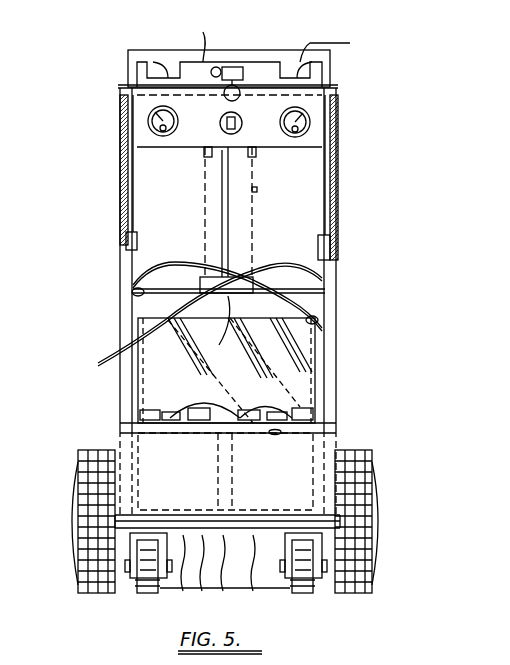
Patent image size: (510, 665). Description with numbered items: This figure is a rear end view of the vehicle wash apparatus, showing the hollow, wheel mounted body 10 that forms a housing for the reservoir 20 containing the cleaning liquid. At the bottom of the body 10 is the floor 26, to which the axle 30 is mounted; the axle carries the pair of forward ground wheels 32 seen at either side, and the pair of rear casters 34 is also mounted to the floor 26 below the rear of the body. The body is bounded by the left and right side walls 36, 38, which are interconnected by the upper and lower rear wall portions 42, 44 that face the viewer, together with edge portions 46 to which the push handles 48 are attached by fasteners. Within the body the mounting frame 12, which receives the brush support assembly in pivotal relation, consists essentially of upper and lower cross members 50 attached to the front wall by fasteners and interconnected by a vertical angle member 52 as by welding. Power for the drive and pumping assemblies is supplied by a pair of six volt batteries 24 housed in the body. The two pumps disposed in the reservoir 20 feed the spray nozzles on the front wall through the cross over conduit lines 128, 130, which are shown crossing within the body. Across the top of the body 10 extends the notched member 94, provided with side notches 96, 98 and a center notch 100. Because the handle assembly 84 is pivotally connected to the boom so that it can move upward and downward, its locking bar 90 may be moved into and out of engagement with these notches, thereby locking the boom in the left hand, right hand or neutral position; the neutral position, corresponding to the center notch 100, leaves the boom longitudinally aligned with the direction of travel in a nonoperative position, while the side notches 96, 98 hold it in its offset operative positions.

The body 10 is at (353, 244).
The mounting frame 12 is at (257, 191).
The reservoir 20 is at (302, 348).
The batteries 24 is at (160, 410).
The floor 26 is at (243, 525).
The axle 30 is at (205, 585).
The forward ground wheels 32 is at (82, 460).
The rear casters 34 is at (140, 592).
The left side wall 36 is at (122, 323).
The right side wall 38 is at (340, 278).
The upper rear wall portion 42 is at (338, 160).
The lower rear wall portion 44 is at (281, 437).
The edge portions 46 is at (132, 292).
The push handles 48 is at (130, 165).
The cross members 50 is at (175, 283).
The vertical angle member 52 is at (218, 210).
The handle assembly 84 is at (228, 100).
The locking bar 90 is at (223, 67).
The notched member 94 is at (194, 39).
The side notch 96 is at (338, 48).
The side notch 98 is at (150, 48).
The center notch 100 is at (235, 63).
The cross over conduit line 128 is at (383, 88).
The cross over conduit line 130 is at (98, 363).